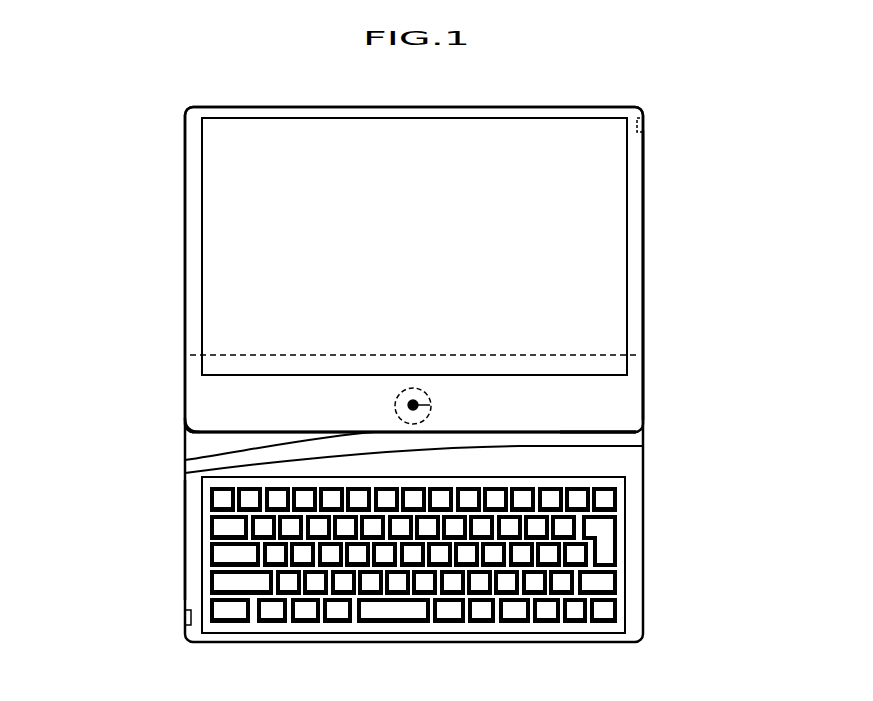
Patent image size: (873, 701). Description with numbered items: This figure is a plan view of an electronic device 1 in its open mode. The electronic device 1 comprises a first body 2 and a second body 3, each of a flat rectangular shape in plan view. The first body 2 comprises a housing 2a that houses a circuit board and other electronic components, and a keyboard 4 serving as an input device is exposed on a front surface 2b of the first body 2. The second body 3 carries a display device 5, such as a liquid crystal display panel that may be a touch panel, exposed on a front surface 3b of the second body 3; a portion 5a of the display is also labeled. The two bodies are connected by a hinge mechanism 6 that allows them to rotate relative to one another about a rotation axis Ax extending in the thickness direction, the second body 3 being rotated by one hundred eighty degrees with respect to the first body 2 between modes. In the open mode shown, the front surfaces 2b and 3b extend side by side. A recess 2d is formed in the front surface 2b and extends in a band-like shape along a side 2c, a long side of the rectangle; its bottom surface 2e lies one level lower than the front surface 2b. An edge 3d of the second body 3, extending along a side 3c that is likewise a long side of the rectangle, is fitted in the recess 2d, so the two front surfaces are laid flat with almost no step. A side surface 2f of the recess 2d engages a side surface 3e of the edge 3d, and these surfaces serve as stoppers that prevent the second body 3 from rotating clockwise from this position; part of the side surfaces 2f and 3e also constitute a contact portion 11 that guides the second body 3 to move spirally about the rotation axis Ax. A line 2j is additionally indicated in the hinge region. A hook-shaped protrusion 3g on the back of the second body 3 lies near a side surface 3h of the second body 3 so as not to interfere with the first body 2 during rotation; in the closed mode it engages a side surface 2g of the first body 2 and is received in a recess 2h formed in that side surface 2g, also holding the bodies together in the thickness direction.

The electronic device 1 is at (403, 365).
The first body 2 is at (403, 365).
The housing 2a is at (636, 570).
The front surface 2b is at (472, 374).
The side 2c is at (616, 356).
The recess 2d is at (231, 447).
The bottom surface 2e is at (233, 393).
The side surface 2f is at (210, 458).
The side surface 2g is at (185, 536).
The recess 2h is at (185, 618).
The rear edge portion 2j is at (397, 448).
The second body 3 is at (648, 181).
The front surface 3b is at (372, 118).
The side 3c is at (575, 433).
The edge 3d is at (613, 403).
The side surface 3e is at (200, 441).
The protrusion 3g is at (645, 123).
The side surface 3h is at (645, 237).
The keyboard 4 is at (596, 643).
The display device 5 is at (350, 228).
The display surface 5a is at (350, 228).
The hinge mechanism 6 is at (423, 386).
The contact portion 11 is at (377, 400).
The rotation axis Ax is at (430, 405).